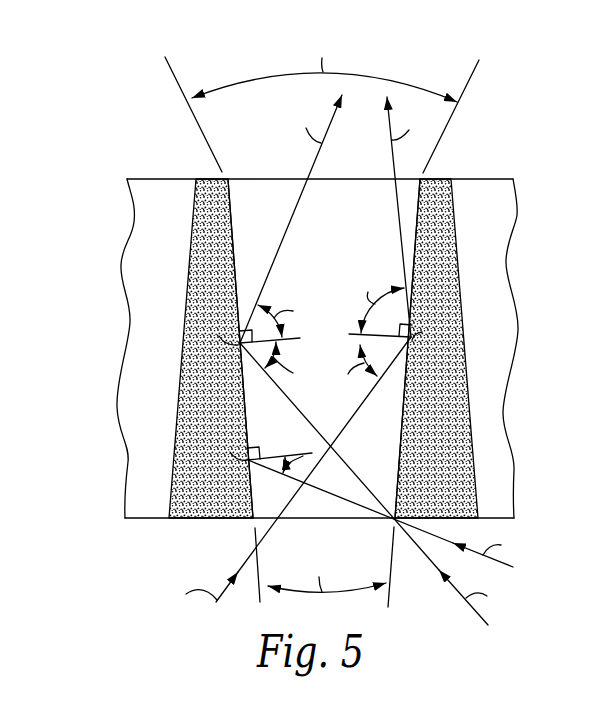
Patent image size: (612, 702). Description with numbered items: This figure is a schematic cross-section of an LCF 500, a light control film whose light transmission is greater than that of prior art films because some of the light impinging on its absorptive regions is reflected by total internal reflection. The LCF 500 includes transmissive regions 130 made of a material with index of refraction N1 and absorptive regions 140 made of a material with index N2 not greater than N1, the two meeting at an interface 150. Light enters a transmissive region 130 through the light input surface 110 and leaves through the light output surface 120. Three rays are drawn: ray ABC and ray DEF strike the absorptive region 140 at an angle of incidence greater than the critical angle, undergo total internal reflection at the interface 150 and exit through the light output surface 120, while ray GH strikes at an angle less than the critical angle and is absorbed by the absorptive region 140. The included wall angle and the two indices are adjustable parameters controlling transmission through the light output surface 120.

The LCF 500 is at (141, 92).
The light output surface 120 is at (160, 178).
The light input surface 110 is at (187, 520).
The absorptive region 140 is at (200, 352).
The interface 150 is at (230, 252).
The transmissive region 130 is at (268, 296).